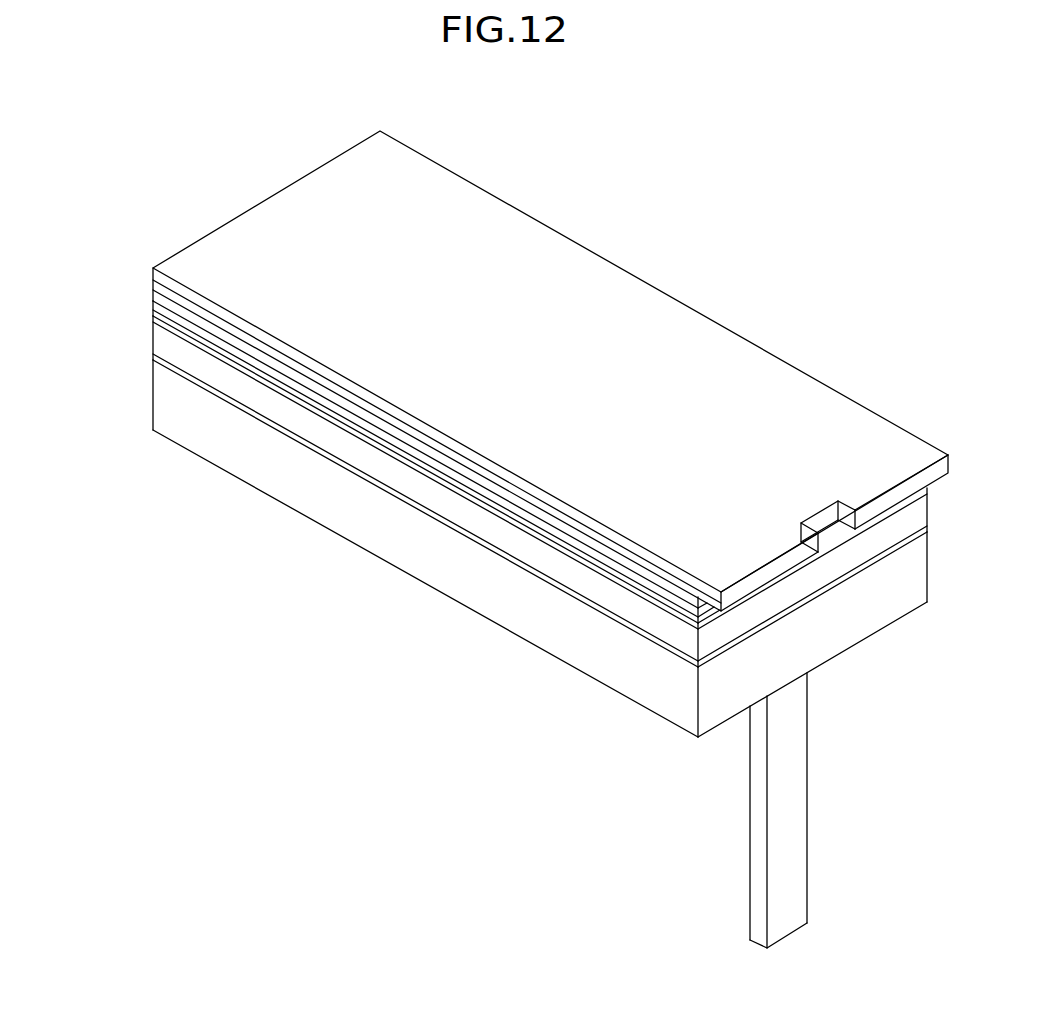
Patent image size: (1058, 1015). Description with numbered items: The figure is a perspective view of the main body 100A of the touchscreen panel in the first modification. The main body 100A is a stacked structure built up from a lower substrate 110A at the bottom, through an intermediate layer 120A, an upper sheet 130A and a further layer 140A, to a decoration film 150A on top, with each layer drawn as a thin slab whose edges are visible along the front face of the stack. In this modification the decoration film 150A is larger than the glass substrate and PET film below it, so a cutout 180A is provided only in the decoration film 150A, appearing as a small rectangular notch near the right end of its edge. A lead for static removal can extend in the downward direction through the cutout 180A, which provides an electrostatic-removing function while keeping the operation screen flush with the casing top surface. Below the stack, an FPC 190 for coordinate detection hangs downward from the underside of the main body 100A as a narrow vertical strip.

The main body 100A is at (832, 152).
The lower substrate 110A is at (160, 393).
The lower layer 120A is at (153, 338).
The upper sheet 130A is at (153, 308).
The upper intermediate layer 140A is at (153, 292).
The decoration film 150A is at (153, 280).
The cutout 180A is at (826, 518).
The FPC for coordinate detection 190 is at (797, 853).